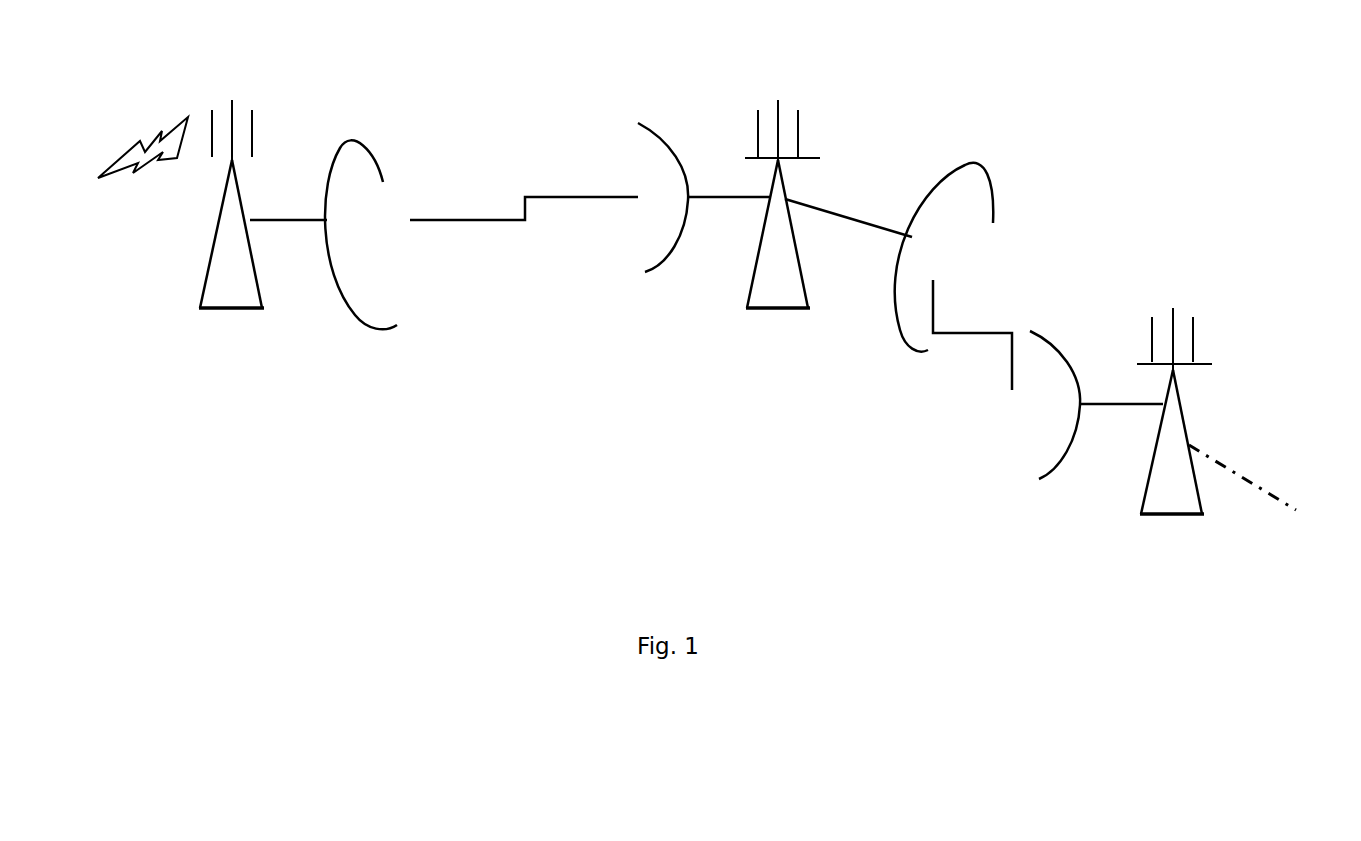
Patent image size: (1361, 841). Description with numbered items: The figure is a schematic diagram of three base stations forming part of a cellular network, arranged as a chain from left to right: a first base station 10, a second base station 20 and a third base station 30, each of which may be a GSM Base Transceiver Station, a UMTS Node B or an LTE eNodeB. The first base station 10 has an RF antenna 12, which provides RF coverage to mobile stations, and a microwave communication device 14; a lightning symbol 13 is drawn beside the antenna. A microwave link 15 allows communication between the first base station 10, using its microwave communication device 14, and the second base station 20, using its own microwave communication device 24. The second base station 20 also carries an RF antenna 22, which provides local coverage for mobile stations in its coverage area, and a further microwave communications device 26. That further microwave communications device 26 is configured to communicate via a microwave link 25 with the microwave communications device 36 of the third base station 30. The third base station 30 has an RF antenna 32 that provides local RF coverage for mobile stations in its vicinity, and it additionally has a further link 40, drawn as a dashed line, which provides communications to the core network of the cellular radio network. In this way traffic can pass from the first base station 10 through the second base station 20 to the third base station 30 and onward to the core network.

The first base station 10 is at (205, 330).
The RF antenna 12 is at (273, 100).
The lightning strike / interference 13 is at (135, 133).
The microwave communication device 14 is at (382, 128).
The microwave link 15 is at (523, 232).
The second base station 20 is at (768, 328).
The RF antenna 22 is at (778, 90).
The microwave communication device 24 is at (617, 120).
The microwave link 25 is at (975, 355).
The further microwave communications device 26 is at (1022, 203).
The third base station 30 is at (1120, 505).
The RF antenna 32 is at (1199, 302).
The microwave communications device 36 is at (1069, 338).
The further link 40 is at (1257, 483).